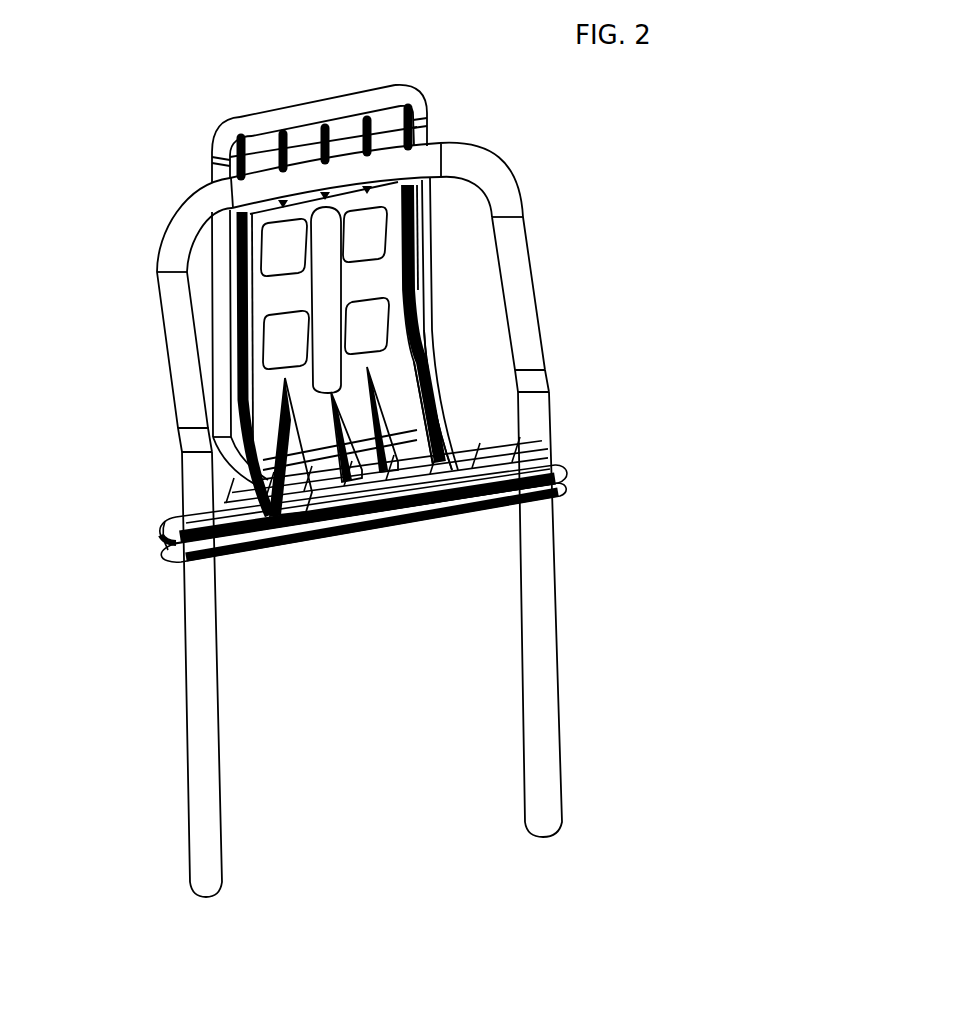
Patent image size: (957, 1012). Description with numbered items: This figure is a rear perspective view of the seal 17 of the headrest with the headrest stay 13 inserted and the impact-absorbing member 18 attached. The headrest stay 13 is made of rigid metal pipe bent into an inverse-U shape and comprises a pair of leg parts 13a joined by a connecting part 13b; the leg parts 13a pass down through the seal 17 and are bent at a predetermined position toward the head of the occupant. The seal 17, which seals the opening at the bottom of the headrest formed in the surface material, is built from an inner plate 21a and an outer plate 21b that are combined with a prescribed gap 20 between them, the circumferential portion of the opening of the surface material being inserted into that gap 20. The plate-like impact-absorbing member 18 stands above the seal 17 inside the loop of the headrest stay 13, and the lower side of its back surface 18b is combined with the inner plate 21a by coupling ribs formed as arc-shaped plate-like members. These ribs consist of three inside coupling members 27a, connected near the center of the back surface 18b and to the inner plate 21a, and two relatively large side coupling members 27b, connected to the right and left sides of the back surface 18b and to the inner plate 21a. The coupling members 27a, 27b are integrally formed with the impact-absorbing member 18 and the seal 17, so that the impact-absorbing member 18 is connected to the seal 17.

The headrest stay 13 is at (552, 346).
The leg parts 13a is at (213, 752).
The connecting part 13b is at (275, 190).
The seal 17 is at (586, 457).
The impact-absorbing member 18 is at (343, 86).
The back surface 18b is at (355, 275).
The gap 20 is at (575, 478).
The inner plate 21a is at (170, 528).
The outer plate 21b is at (246, 560).
The inside coupling members 27a is at (335, 432).
The side coupling members 27b is at (435, 430).